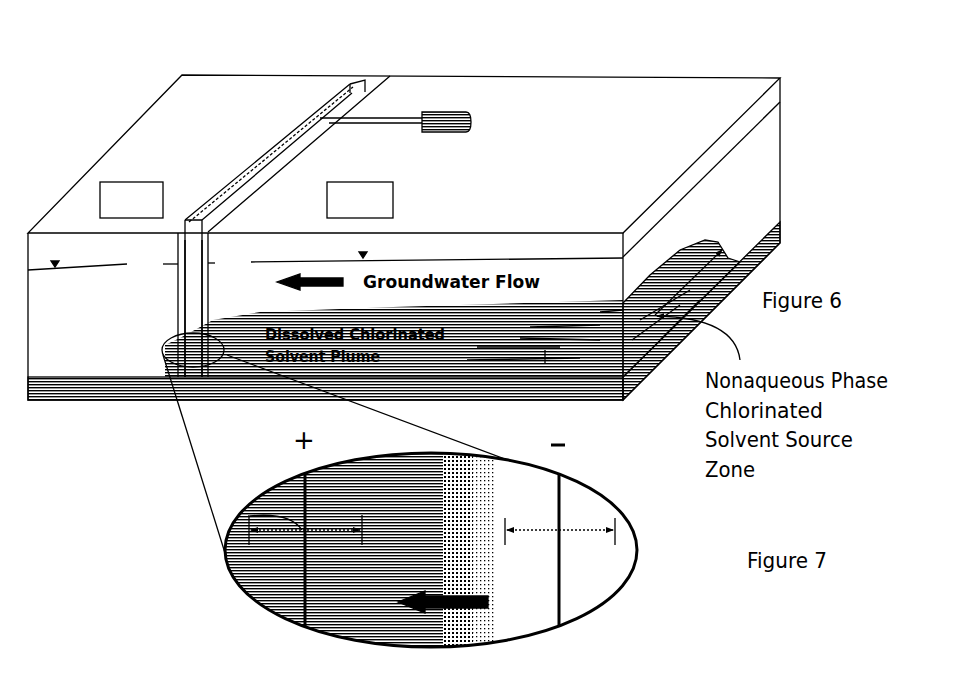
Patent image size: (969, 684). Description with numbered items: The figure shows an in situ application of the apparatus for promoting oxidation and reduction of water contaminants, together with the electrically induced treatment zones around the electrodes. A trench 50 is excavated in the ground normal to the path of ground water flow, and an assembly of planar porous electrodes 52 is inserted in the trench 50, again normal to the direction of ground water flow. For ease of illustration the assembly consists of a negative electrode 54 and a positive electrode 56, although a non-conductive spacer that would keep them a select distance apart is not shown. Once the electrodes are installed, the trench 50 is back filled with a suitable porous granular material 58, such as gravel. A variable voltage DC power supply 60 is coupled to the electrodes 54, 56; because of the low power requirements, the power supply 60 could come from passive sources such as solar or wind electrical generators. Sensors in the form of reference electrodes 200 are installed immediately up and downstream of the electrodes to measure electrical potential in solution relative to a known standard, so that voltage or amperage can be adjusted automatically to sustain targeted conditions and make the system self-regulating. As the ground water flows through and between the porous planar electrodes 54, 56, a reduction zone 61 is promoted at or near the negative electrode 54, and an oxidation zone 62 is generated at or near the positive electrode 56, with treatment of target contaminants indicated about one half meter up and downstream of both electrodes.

In FIG. 6, the trench 50 is at (377, 82).
In FIG. 6, the assembly of planar porous electrodes 52 is at (278, 153).
In FIG. 6, the negative electrode 54 is at (201, 287).
In FIG. 7, the negative electrode 54 is at (560, 563).
In FIG. 6, the positive electrode 56 is at (186, 286).
In FIG. 7, the positive electrode 56 is at (303, 572).
In FIG. 6, the porous granular material 58 is at (182, 319).
In FIG. 6, the variable voltage DC power supply 60 is at (471, 124).
In FIG. 7, the reduction zone 61 is at (573, 528).
In FIG. 7, the oxidation zone 62 is at (247, 510).
In FIG. 6, the reference electrodes 200 is at (184, 197).